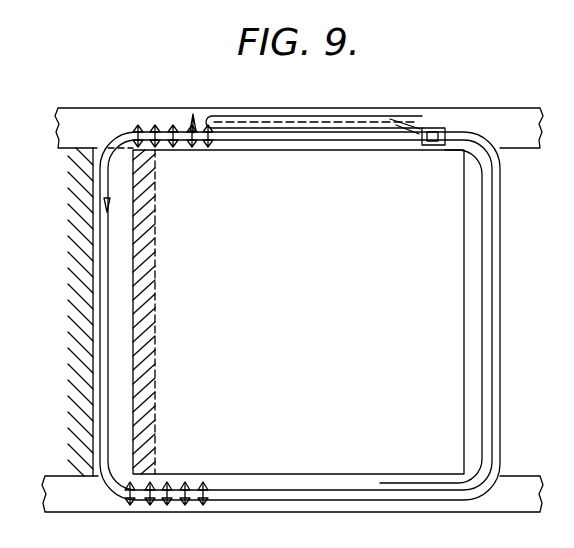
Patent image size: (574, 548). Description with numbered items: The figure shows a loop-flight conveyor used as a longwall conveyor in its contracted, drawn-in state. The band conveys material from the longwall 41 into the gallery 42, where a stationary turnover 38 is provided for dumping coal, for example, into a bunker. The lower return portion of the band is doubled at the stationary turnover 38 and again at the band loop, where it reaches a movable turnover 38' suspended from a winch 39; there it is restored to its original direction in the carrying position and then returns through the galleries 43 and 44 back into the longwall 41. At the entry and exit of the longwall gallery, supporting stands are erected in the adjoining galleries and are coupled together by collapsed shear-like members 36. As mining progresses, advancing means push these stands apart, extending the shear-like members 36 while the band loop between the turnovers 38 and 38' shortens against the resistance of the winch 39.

The shear-like members 36 is at (142, 128).
The stationary turnover 38 is at (445, 111).
The movable turnover 38' is at (314, 105).
The winch 39 is at (194, 116).
The longwall 41 is at (117, 287).
The gallery 42 is at (539, 130).
The gallery 43 is at (481, 298).
The gallery 44 is at (334, 500).